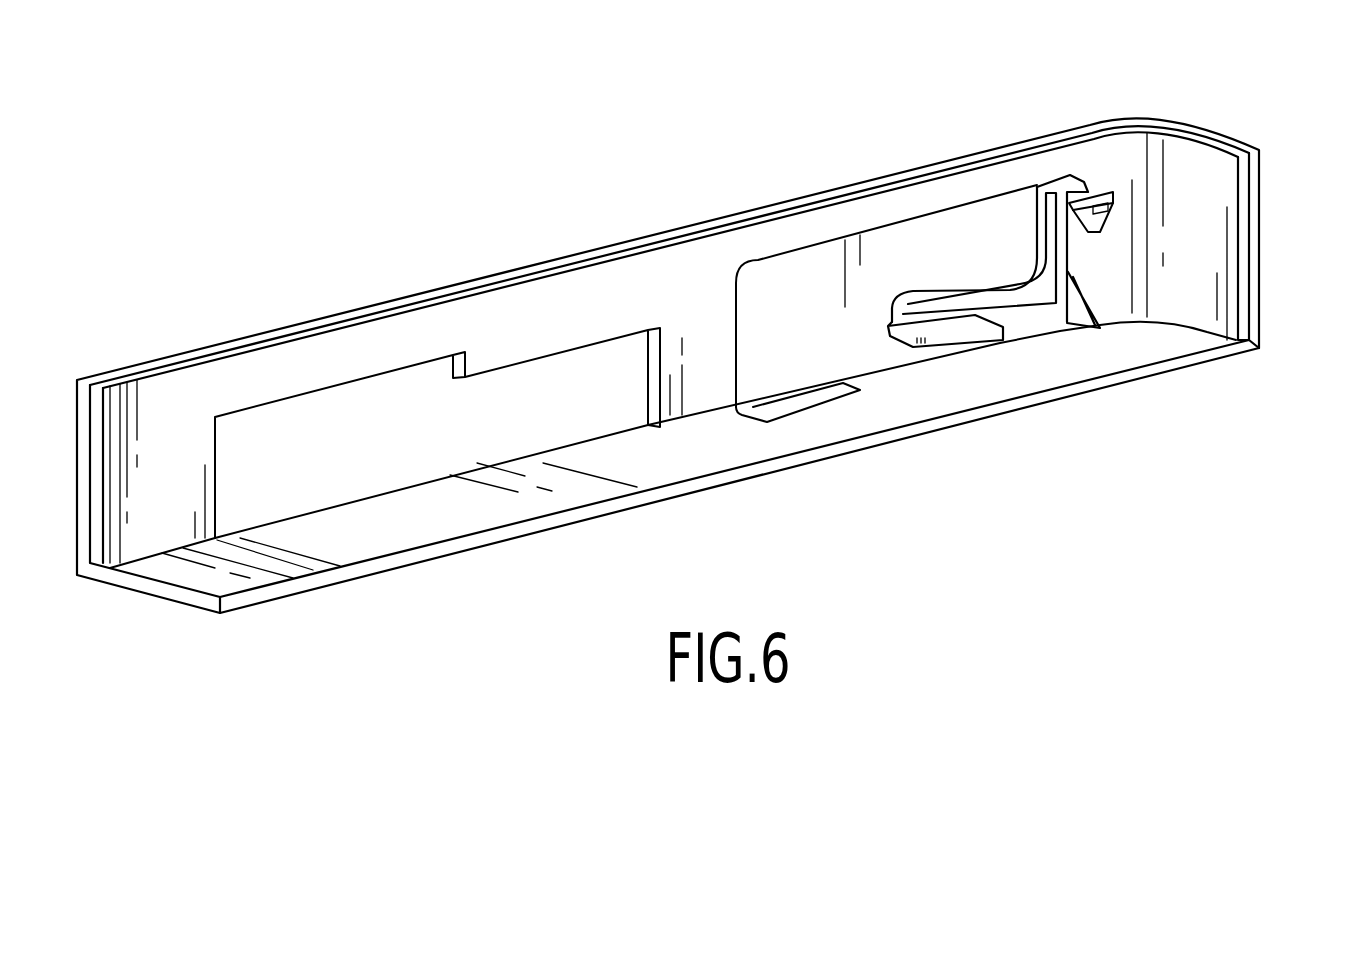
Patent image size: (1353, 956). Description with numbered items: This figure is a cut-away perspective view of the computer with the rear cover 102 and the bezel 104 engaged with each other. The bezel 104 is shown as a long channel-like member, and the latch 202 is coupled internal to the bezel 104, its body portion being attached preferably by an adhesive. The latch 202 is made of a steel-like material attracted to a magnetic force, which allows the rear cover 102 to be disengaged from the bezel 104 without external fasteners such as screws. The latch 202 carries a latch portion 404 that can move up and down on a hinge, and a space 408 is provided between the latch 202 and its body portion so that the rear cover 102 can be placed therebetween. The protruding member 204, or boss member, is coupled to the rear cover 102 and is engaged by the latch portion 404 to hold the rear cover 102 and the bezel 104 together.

The rear cover 102 is at (1213, 163).
The bezel 104 is at (870, 180).
The latch 202 is at (1041, 186).
The protruding member 204 is at (1117, 208).
The latch portion 404 is at (1089, 193).
The space 408 is at (1247, 150).